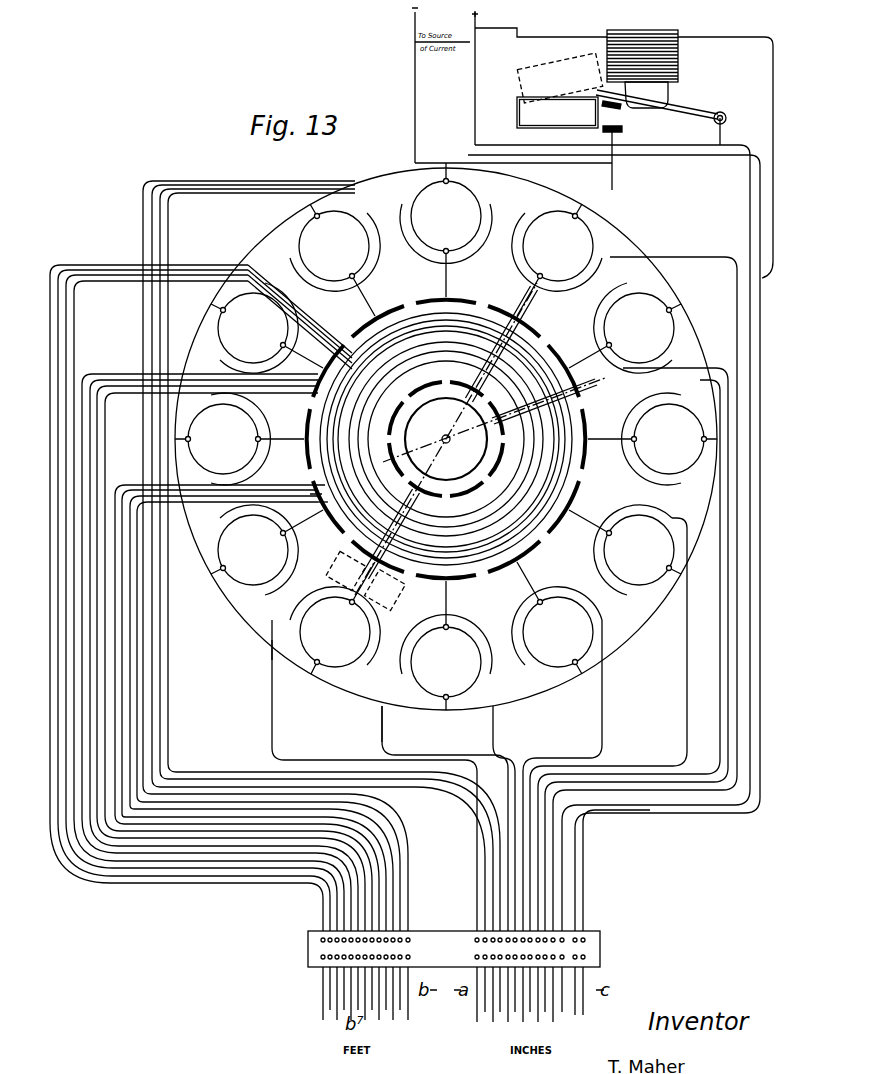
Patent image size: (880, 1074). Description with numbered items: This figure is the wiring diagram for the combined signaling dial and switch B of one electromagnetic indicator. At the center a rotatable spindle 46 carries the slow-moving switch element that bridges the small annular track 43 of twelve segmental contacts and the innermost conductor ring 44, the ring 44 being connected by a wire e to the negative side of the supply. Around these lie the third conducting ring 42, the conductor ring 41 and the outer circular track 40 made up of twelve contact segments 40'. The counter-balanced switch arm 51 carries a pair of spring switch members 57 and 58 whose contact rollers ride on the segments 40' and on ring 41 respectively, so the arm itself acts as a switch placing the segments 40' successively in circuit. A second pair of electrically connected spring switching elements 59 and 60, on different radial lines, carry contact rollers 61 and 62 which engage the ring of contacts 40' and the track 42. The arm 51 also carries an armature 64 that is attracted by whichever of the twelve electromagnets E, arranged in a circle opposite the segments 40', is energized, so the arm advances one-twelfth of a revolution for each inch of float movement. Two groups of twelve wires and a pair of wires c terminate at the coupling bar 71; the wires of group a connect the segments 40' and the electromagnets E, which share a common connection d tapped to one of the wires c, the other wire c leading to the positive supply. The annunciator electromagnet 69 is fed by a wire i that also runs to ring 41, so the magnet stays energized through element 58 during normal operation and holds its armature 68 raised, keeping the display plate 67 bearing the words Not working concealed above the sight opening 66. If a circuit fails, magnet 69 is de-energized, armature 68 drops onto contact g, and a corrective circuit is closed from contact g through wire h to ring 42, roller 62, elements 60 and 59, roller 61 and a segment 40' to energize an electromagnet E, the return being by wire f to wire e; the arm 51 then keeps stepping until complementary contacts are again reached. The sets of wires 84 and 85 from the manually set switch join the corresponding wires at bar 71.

The circular contact track 40 is at (467, 439).
The contact segments 40' is at (443, 439).
The conductor ring 41 is at (566, 470).
The third inner conducting ring 42 is at (560, 452).
The annular track of segmental contacts 43 is at (498, 464).
The circular track or conductor 44 is at (505, 441).
The rotatable spindle 46 is at (446, 435).
The counter-balanced switch arm 51 is at (520, 318).
The spring switch member 57 is at (396, 588).
The spring switch member 58 is at (498, 316).
The spring switching element 59 is at (322, 492).
The spring switching element 60 is at (570, 384).
The contact roller 61 is at (330, 508).
The contact roller 62 is at (565, 392).
The armature 64 is at (392, 606).
The sight opening 66 is at (516, 110).
The display plate 67 is at (568, 68).
The armature 68 is at (672, 103).
The annunciator electromagnet 69 is at (680, 55).
The coupling bar 71 is at (600, 952).
The set of wires 84 is at (475, 925).
The set of wires 85 is at (312, 922).
The signal dial B is at (446, 439).
The electromagnets E is at (318, 670).
The group of wires a is at (380, 727).
The pair of wires c is at (660, 812).
The common electrical connection d is at (512, 172).
The wire e is at (436, 346).
The wire f is at (666, 164).
The contact g is at (622, 129).
The wire h is at (484, 268).
The wire i is at (590, 310).